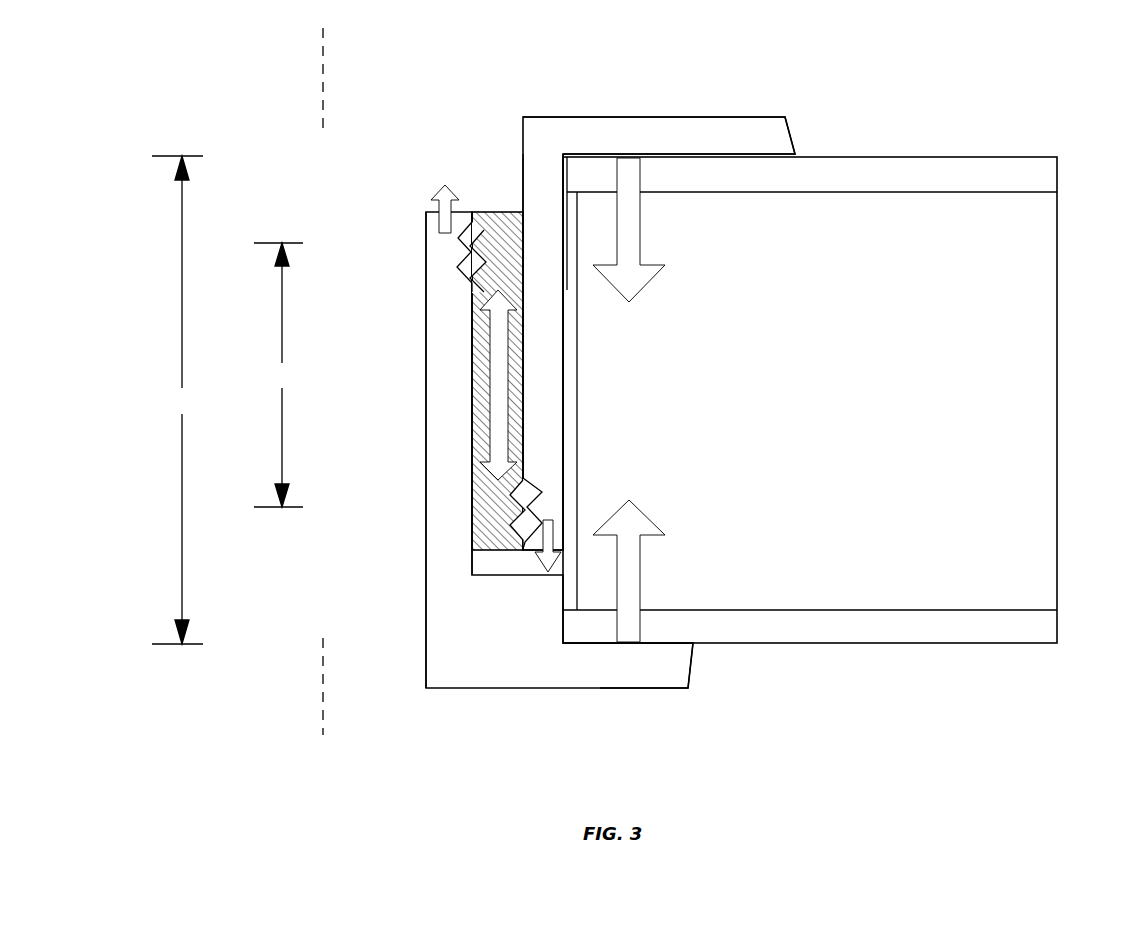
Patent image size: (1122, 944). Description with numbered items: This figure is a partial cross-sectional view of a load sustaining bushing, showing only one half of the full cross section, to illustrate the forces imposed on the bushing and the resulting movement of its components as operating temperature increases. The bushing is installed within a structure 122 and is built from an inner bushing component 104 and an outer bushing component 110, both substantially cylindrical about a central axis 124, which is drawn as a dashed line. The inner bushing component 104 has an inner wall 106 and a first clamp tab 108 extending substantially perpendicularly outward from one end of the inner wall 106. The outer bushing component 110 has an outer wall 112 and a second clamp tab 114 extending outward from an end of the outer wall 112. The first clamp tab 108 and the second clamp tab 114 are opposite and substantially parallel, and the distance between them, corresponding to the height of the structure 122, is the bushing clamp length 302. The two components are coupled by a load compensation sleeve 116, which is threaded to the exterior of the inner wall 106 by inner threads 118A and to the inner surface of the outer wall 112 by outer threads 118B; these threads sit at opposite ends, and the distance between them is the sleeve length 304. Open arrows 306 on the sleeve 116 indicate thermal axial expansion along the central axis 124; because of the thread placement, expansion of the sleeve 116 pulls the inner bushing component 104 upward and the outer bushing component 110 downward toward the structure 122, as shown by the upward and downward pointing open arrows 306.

The inner bushing component 104 is at (455, 673).
The inner wall 106 is at (450, 418).
The first clamp tab 108 is at (653, 677).
The outer bushing component 110 is at (533, 127).
The outer wall 112 is at (538, 183).
The second clamp tab 114 is at (742, 128).
The load compensation sleeve 116 is at (472, 338).
The inner threads 118A is at (470, 253).
The outer threads 118B is at (512, 505).
The structure 122 is at (1010, 178).
The central axis 124 is at (324, 383).
The bushing clamp length 302 is at (166, 400).
The sleeve length 304 is at (267, 375).
The open arrows 306 is at (437, 195).